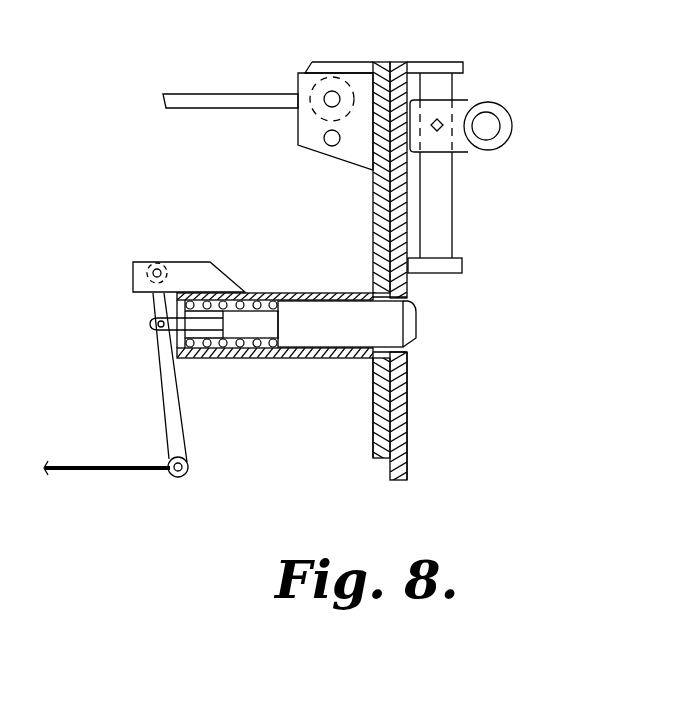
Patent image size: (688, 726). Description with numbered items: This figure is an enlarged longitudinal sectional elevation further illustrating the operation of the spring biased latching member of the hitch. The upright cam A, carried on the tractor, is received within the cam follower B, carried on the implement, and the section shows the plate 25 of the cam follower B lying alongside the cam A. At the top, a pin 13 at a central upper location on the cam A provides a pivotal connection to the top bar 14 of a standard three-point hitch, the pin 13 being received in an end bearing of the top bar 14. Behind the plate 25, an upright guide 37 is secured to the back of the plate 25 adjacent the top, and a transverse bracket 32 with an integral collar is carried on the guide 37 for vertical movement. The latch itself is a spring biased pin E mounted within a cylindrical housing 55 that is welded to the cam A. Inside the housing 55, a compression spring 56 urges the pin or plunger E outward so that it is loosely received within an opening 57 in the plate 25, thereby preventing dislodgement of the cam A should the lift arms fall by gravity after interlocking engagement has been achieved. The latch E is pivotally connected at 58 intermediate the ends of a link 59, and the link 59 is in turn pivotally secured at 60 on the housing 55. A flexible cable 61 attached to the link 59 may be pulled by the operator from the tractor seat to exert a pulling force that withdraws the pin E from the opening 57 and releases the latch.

The pin 13 is at (334, 97).
The top bar 14 is at (215, 94).
The plate 25 is at (407, 408).
The transverse bracket 32 is at (498, 108).
The upright guide 37 is at (447, 183).
The cylindrical housing 55 is at (278, 292).
The compression spring 56 is at (255, 360).
The opening 57 is at (403, 295).
The pivotal connection 58 is at (150, 330).
The link 59 is at (160, 400).
The pivot 60 is at (155, 268).
The flexible cable 61 is at (185, 270).
The upright cam A is at (373, 405).
The cam follower B is at (408, 457).
The spring biased pin E is at (400, 327).